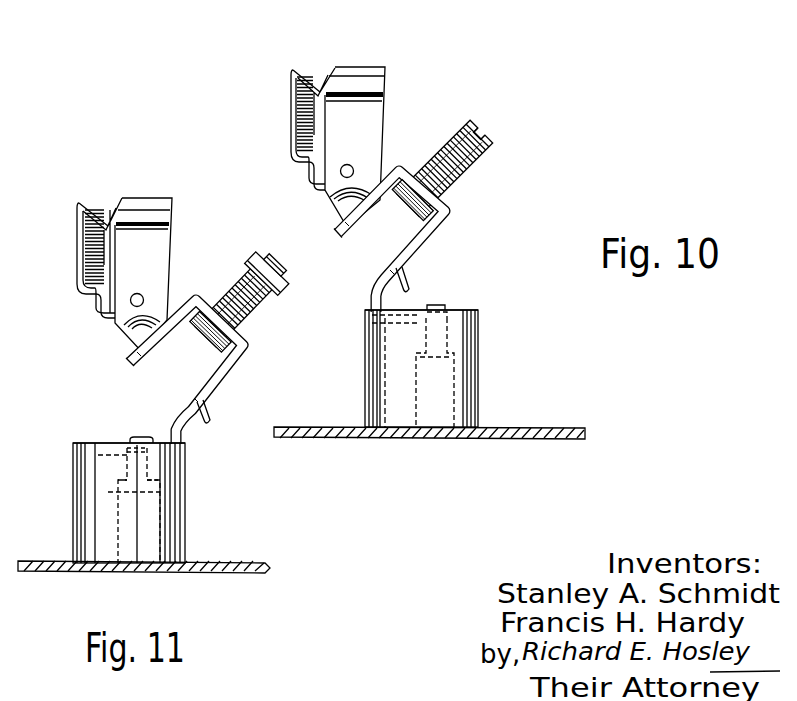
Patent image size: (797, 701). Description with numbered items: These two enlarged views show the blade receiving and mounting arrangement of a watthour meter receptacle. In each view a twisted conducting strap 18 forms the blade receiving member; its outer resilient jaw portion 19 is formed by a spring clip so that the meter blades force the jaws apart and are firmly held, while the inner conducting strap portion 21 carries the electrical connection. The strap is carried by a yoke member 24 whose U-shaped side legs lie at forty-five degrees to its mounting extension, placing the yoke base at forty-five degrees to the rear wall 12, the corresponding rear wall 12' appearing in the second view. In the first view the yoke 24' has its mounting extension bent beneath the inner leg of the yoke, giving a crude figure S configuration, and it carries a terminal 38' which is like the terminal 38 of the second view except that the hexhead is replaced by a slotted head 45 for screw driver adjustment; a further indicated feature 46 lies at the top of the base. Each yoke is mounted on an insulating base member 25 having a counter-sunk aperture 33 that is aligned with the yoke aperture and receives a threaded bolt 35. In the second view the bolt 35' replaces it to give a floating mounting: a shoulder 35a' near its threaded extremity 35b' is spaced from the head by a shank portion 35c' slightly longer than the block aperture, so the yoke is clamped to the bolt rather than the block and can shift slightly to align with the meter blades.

In FIG. 10, the rear wall 12 is at (429, 458).
In FIG. 11, the support plate 12' is at (144, 582).
In FIG. 10, the twisted conducting strap 18 is at (313, 181).
In FIG. 11, the twisted conducting strap 18 is at (162, 244).
In FIG. 10, the outer resilient jaw portion 19 is at (310, 66).
In FIG. 11, the outer resilient jaw portion 19 is at (97, 202).
In FIG. 11, the inner conducting strap portion 21 is at (102, 442).
In FIG. 11, the yoke member 24 is at (187, 372).
In FIG. 10, the yoke 24' is at (424, 241).
In FIG. 11, the insulating base member 25 is at (186, 505).
In FIG. 10, the counter-sunk aperture 33 is at (453, 383).
In FIG. 11, the counter-sunk aperture 33 is at (168, 538).
In FIG. 10, the threaded bolt 35 is at (453, 369).
In FIG. 11, the bolt 35' is at (103, 505).
In FIG. 11, the shoulder 35a' is at (185, 462).
In FIG. 11, the threaded extremity 35b' is at (132, 426).
In FIG. 11, the shank portion 35c' is at (179, 489).
In FIG. 11, the terminal 38 is at (241, 299).
In FIG. 10, the terminal 38' is at (445, 124).
In FIG. 10, the slotted head 45 is at (488, 140).
In FIG. 10, the top edge of base 46 is at (460, 313).